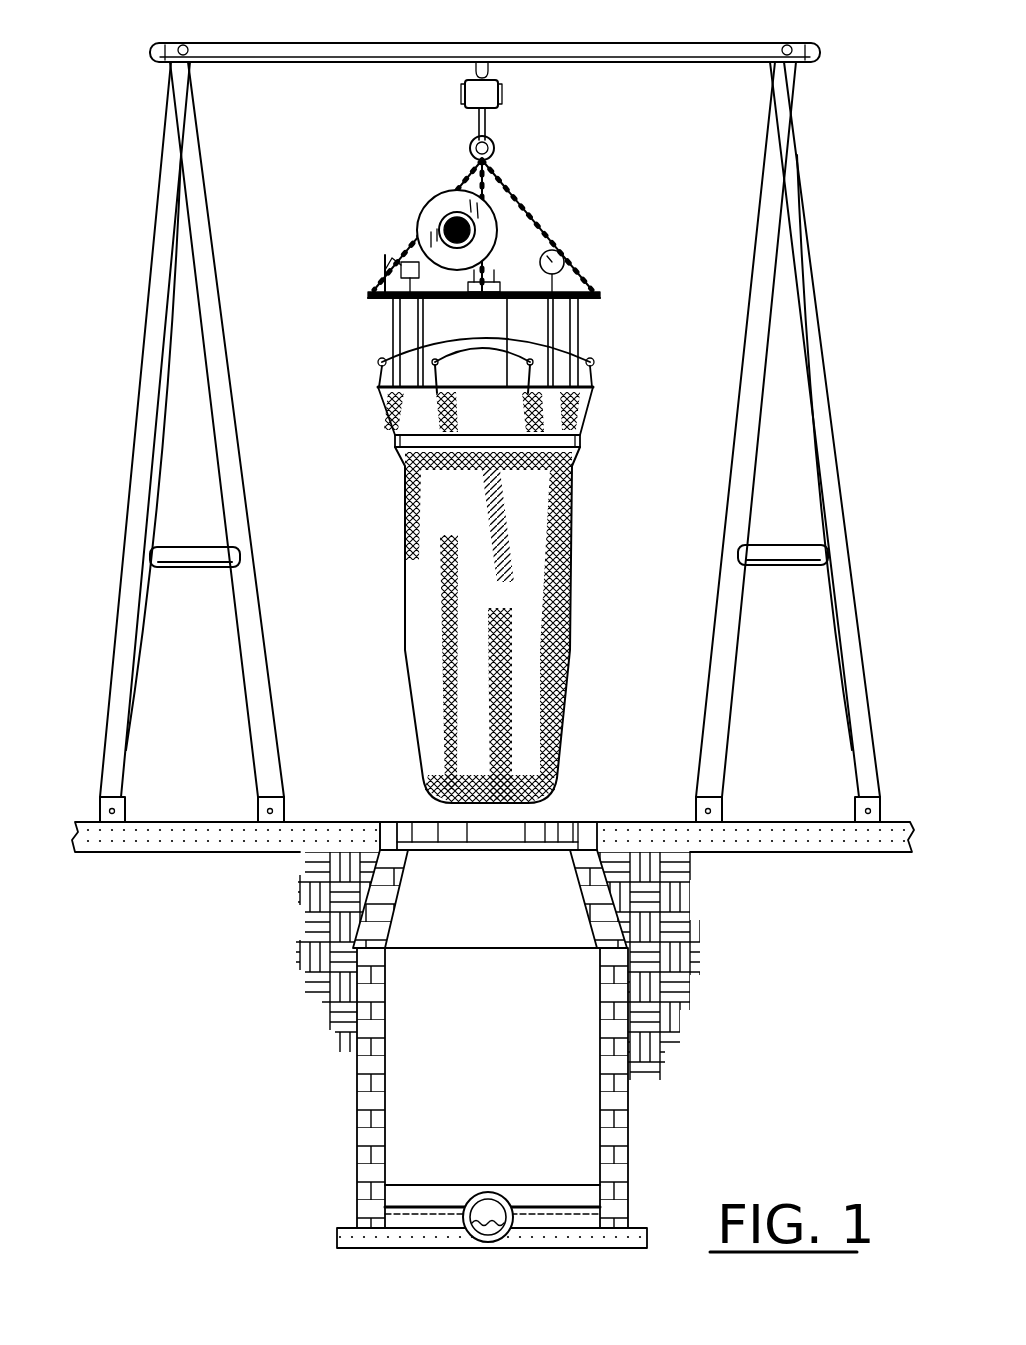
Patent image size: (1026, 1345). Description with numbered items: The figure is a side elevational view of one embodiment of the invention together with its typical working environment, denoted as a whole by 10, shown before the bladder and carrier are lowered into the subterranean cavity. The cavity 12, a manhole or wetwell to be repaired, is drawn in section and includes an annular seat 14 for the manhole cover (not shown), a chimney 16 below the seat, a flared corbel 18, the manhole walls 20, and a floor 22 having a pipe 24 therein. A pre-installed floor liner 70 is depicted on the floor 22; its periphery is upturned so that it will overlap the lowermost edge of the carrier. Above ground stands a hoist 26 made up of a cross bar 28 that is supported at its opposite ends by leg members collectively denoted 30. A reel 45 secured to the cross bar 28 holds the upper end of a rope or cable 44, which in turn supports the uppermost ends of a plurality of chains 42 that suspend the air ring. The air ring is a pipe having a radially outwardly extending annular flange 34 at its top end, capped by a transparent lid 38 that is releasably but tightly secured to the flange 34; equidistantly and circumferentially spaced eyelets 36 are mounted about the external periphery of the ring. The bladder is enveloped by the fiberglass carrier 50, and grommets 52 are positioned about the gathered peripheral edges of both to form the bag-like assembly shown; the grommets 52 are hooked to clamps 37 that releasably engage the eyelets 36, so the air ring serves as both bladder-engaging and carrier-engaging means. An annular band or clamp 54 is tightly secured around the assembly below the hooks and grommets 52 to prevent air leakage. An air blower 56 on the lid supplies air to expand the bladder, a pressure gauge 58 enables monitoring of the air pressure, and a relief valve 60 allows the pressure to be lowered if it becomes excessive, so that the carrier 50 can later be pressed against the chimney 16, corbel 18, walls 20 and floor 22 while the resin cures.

The embodiment of the invention and environment 10 is at (485, 646).
The cavity 12 is at (720, 912).
The annular seat 14 is at (578, 828).
The chimney 16 is at (380, 835).
The corbel 18 is at (573, 890).
The walls 20 is at (598, 1062).
The floor 22 is at (548, 1237).
The pipe 24 is at (468, 1240).
The hoist 26 is at (460, 411).
The cross bar 28 is at (631, 43).
The leg members 30 is at (200, 266).
The annular flange 34 is at (370, 296).
The eyelets 36 is at (445, 346).
The clamps 37 is at (378, 377).
The transparent lid 38 is at (585, 291).
The chains 42 is at (495, 172).
The rope or cable 44 is at (494, 127).
The reel 45 is at (463, 95).
The carrier 50 is at (576, 572).
The grommets 52 is at (447, 408).
The annular band or clamp 54 is at (583, 441).
The air blower 56 is at (440, 196).
The pressure gauge 58 is at (560, 250).
The relief valve 60 is at (405, 262).
The floor liner 70 is at (458, 1205).